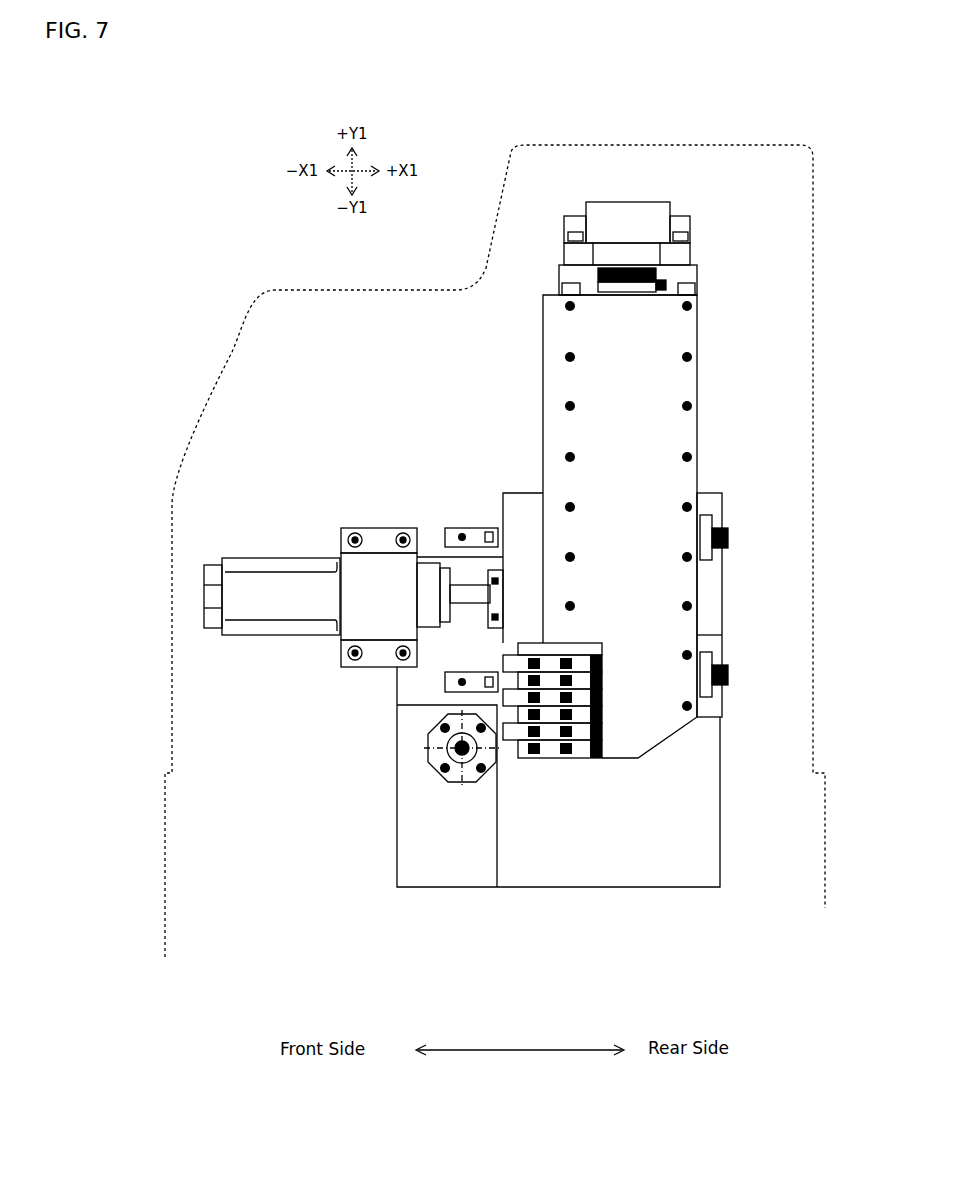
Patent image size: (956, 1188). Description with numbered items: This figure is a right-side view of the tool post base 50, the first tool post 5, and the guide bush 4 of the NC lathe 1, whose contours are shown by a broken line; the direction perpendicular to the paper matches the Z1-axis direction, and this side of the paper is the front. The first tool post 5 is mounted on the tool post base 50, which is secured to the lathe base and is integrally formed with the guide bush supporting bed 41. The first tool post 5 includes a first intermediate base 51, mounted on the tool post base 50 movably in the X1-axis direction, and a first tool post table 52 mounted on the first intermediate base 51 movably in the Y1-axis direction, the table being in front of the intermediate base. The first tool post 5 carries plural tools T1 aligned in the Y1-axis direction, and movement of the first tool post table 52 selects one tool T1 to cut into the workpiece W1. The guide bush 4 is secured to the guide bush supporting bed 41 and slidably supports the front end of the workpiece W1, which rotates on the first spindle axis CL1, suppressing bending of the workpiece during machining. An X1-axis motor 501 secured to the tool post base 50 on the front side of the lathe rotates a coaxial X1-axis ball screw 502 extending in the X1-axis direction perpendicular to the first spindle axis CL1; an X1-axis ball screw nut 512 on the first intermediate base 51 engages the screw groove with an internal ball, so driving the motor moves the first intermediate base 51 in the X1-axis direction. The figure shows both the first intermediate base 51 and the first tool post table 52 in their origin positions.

The NC lathe 1 is at (213, 343).
The first tool post 5 is at (713, 367).
The first tool post table 52 is at (548, 355).
The first intermediate base 51 is at (527, 497).
The X1-axis ball screw nut 512 is at (488, 583).
The X1-axis ball screw 502 is at (470, 585).
The X1-axis motor 501 is at (262, 565).
The tool post base 50 is at (625, 885).
The guide bush supporting bed 41 is at (402, 865).
The workpiece W1 is at (416, 758).
The guide bush 4 is at (432, 752).
The first spindle axis CL1 is at (450, 788).
The tool T1 is at (508, 752).